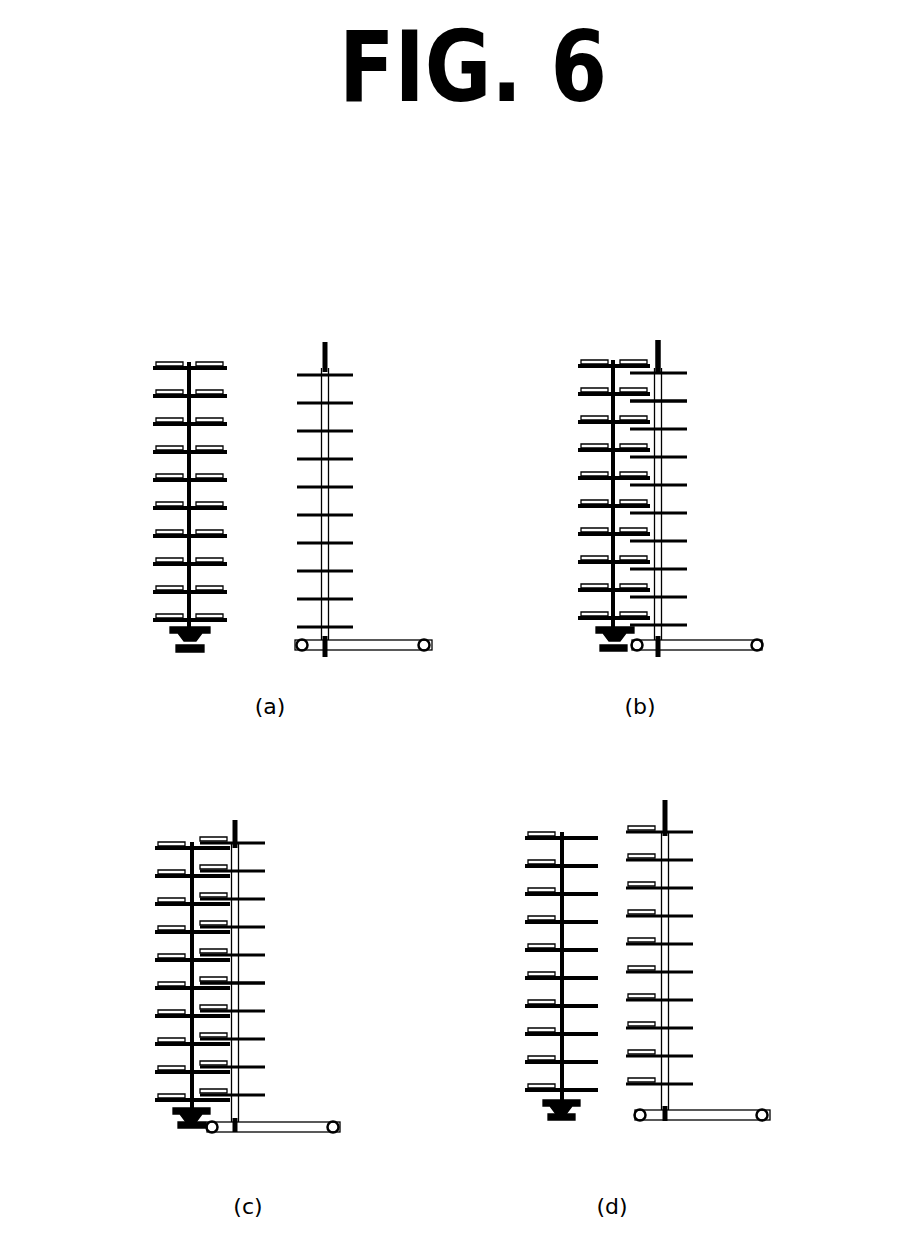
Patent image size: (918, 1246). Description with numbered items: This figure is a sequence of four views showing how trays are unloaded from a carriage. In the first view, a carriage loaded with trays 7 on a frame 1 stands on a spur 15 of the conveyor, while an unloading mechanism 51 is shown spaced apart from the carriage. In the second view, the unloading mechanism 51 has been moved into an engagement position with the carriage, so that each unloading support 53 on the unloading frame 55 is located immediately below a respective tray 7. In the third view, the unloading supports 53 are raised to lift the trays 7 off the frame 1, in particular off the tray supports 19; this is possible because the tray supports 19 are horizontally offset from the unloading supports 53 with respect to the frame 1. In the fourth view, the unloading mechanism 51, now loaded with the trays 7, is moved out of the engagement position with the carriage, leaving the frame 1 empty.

The frame 1 is at (186, 465).
The tray 7 is at (208, 364).
The spur 15 is at (182, 645).
The tray support 19 is at (188, 932).
The unloading mechanism 51 is at (336, 362).
The unloading support 53 is at (642, 404).
The unloading frame 55 is at (660, 352).